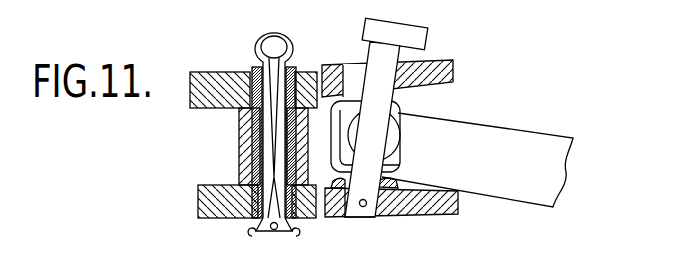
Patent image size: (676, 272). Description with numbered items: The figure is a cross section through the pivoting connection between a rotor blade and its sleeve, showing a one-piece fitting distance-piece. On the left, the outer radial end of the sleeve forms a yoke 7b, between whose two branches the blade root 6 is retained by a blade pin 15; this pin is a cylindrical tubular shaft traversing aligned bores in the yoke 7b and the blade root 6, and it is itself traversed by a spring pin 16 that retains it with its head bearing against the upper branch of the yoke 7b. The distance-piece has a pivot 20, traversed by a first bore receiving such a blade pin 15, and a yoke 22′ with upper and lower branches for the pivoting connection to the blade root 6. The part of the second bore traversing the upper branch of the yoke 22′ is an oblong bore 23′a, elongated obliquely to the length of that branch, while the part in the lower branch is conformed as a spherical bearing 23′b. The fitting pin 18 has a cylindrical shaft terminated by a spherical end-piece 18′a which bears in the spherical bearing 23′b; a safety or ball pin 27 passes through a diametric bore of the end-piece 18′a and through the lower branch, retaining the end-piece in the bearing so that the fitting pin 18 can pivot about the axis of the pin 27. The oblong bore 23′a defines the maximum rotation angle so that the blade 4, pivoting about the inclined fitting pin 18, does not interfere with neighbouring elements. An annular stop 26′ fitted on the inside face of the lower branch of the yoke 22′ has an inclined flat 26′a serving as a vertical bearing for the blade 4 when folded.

The blade 4 is at (555, 132).
The blade root 6 is at (405, 150).
The yoke 7b is at (225, 207).
The blade pin 15 is at (258, 127).
The spring pin 16 is at (256, 41).
The fitting pin 18 is at (387, 67).
The spherical end-piece 18′a is at (370, 213).
The pivot 20 is at (252, 157).
The yoke 22′ is at (455, 78).
The oblong bore 23′a is at (365, 80).
The spherical bearing 23′b is at (355, 215).
The annular stop 26′ is at (328, 217).
The inclined flat 26′a is at (392, 180).
The safety pin 27 is at (366, 205).